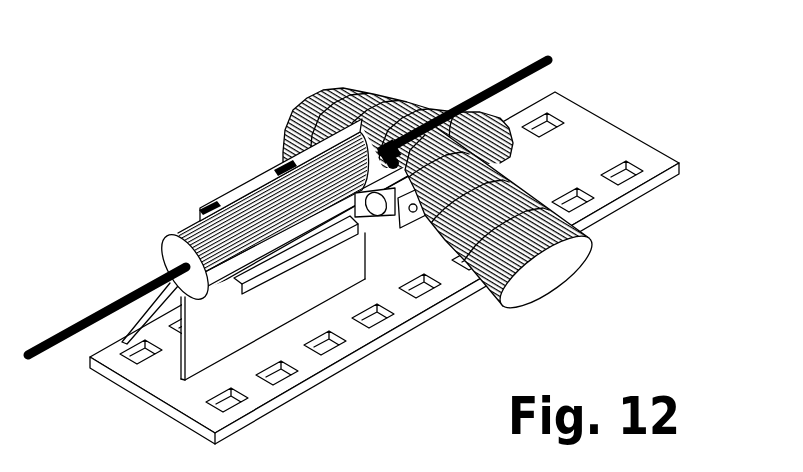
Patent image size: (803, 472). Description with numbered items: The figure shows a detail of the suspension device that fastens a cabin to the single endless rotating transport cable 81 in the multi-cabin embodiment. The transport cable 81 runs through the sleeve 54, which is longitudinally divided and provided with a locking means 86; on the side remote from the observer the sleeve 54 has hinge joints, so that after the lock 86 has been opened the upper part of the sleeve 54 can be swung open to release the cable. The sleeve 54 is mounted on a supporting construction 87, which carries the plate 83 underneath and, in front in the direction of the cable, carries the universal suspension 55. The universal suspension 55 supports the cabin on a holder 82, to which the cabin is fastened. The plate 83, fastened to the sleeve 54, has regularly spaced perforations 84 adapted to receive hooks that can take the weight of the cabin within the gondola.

The sleeve 54 is at (190, 230).
The universal suspension 55 is at (330, 197).
The transport cable 81 is at (552, 60).
The holder 82 is at (537, 239).
The plate 83 is at (270, 406).
The perforations 84 is at (325, 343).
The locking means 86 is at (303, 235).
The supporting construction 87 is at (227, 323).